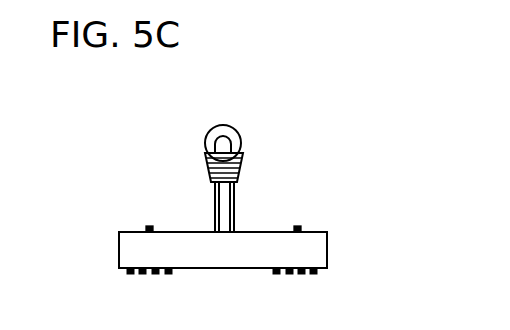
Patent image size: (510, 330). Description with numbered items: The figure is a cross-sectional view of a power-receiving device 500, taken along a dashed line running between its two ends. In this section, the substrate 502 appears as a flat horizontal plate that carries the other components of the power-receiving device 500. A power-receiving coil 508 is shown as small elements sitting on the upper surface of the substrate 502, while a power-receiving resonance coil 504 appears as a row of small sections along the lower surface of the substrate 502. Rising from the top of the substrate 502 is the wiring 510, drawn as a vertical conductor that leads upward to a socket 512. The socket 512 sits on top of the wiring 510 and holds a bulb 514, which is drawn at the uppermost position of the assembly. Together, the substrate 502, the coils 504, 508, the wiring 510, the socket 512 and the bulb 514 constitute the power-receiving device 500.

The power-receiving device 500 is at (232, 92).
The substrate 502 is at (327, 240).
The power-receiving resonance coil 504 is at (132, 276).
The power-receiving coil 508 is at (147, 228).
The wiring 510 is at (236, 203).
The socket 512 is at (242, 163).
The bulb 514 is at (241, 130).